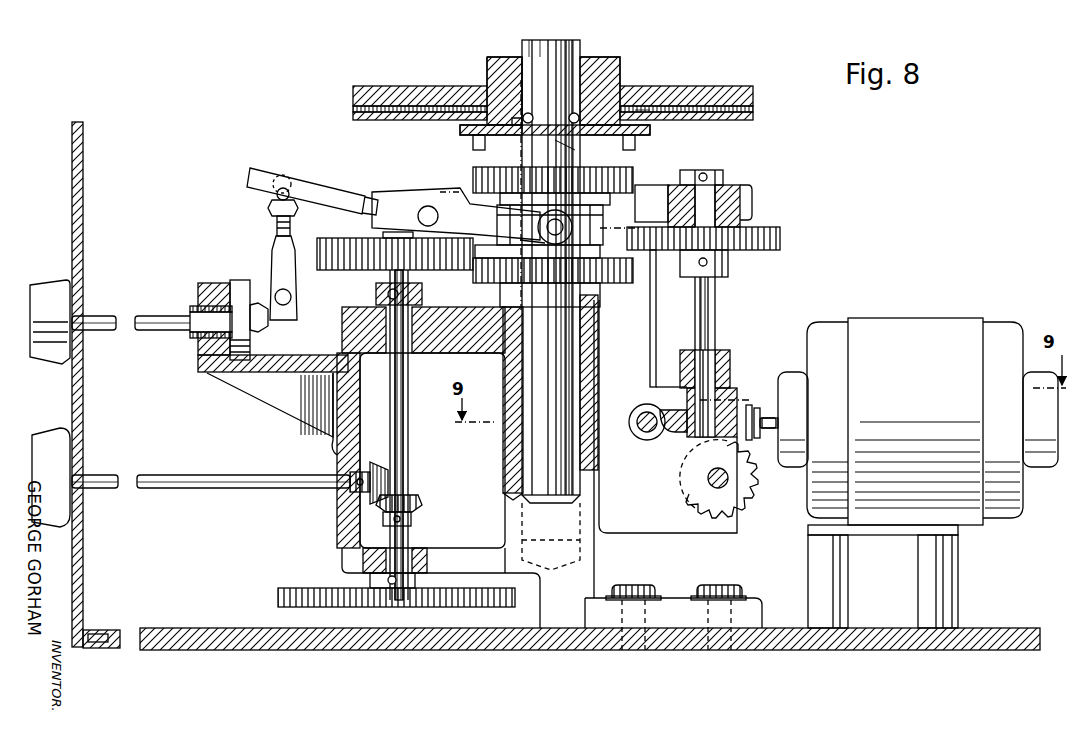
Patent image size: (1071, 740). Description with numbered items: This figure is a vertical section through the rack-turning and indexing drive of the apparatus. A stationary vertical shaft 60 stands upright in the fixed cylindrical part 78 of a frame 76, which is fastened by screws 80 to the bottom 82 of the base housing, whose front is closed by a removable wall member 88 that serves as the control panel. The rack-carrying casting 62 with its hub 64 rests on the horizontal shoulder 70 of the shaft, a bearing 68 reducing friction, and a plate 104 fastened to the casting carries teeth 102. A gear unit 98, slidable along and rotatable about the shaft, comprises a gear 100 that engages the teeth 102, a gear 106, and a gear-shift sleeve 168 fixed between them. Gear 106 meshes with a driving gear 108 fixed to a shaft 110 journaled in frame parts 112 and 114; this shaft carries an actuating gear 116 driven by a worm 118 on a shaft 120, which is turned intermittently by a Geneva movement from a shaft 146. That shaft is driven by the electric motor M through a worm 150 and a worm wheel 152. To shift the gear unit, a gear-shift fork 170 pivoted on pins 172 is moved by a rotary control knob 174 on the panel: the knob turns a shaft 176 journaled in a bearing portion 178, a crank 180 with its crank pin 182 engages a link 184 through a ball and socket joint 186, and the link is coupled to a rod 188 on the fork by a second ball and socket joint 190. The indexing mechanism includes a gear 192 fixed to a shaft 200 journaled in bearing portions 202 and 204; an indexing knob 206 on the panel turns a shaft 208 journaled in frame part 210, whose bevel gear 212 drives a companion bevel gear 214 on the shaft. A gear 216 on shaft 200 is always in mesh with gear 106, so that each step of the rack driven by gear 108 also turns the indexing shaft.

The stationary vertical shaft 60 is at (583, 360).
The casting 62 is at (728, 84).
The hub 64 is at (620, 65).
The bearing 68 is at (523, 110).
The horizontal shoulder 70 is at (575, 150).
The frame 76 is at (600, 553).
The fixed cylindrical part 78 is at (500, 455).
The screws 80 is at (640, 583).
The bottom 82 is at (110, 652).
The removable wall member 88 is at (70, 160).
The gear unit 98 is at (604, 227).
The gear 100 is at (633, 178).
The teeth 102 is at (473, 145).
The plate 104 is at (630, 90).
The gear 106 is at (495, 240).
The driving gear 108 is at (780, 240).
The shaft 110 is at (715, 310).
The frame part 112 is at (740, 190).
The frame part 114 is at (730, 360).
The actuating gear 116 is at (680, 440).
The worm 118 is at (640, 430).
The shaft 120 is at (648, 380).
The rotatable shaft 146 is at (708, 480).
The worm 150 is at (755, 405).
The worm wheel 152 is at (752, 485).
The gear-shift sleeve 168 is at (520, 285).
The gear-shift fork 170 is at (445, 203).
The pivot pins 172 is at (425, 206).
The rotary control knob 174 is at (45, 282).
The rotary shaft 176 is at (115, 316).
The bearing portion 178 is at (210, 283).
The crank 180 is at (240, 280).
The crank pin 182 is at (283, 320).
The link 184 is at (298, 315).
The ball and socket joint 186 is at (291, 297).
The rod 188 is at (325, 185).
The ball and socket joint 190 is at (280, 175).
The gear 192 is at (465, 610).
The shaft 200 is at (408, 440).
The bearing portion 202 is at (415, 545).
The bearing portion 204 is at (415, 345).
The indexing knob 206 is at (40, 436).
The shaft 208 is at (150, 490).
The frame part 210 is at (337, 520).
The bevel gear 212 is at (382, 462).
The bevel gear 214 is at (425, 497).
The gear 216 is at (345, 240).
The electric motor M is at (920, 318).